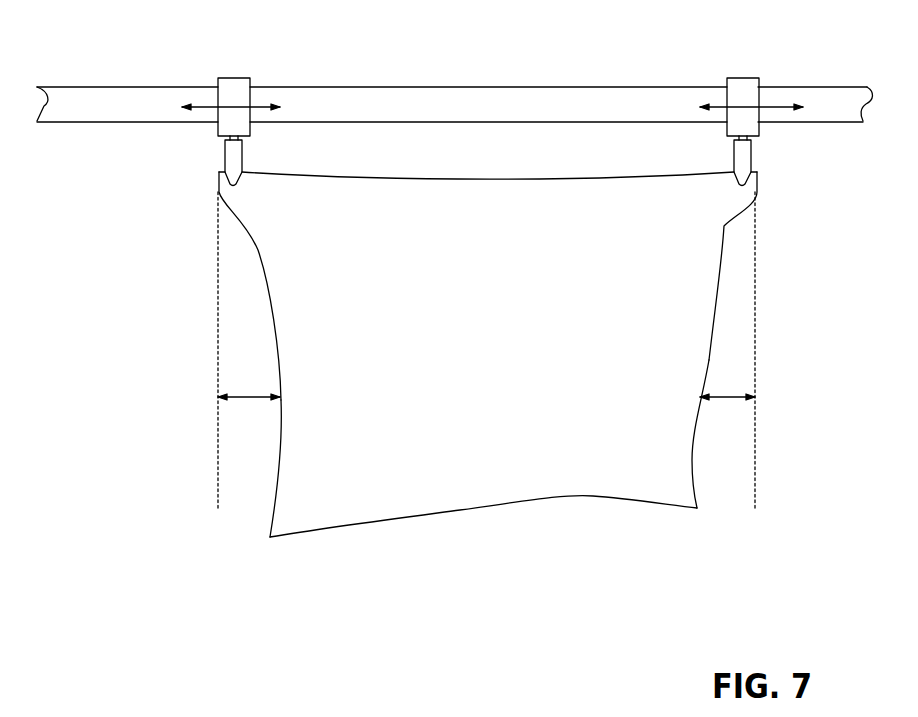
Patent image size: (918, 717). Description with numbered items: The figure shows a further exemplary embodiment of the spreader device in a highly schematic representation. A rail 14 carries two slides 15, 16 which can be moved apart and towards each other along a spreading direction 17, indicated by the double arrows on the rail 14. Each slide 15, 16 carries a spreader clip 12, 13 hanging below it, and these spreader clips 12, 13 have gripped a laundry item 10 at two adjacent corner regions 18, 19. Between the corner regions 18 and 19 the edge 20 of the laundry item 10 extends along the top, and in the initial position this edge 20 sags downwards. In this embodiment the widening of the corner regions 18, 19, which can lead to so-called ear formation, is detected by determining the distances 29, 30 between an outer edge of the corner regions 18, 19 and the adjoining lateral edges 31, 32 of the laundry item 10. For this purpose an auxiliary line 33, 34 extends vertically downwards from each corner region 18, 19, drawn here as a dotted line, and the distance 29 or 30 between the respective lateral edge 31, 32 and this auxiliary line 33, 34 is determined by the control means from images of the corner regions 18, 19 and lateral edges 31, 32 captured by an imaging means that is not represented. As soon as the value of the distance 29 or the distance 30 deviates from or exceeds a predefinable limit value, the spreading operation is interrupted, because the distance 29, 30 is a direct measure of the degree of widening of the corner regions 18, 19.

The laundry item 10 is at (487, 327).
The spreader clip 12 is at (742, 163).
The spreader clip 13 is at (230, 157).
The rail 14 is at (88, 103).
The slide 15 is at (742, 87).
The slide 16 is at (236, 89).
The spreading direction 17 is at (193, 103).
The corner region 18 is at (247, 203).
The corner region 19 is at (720, 203).
The edge 20 is at (340, 172).
The distance 29 is at (247, 400).
The distance 30 is at (727, 398).
The lateral edge 31 is at (277, 482).
The lateral edge 32 is at (692, 465).
The auxiliary line 33 is at (217, 372).
The auxiliary line 34 is at (755, 365).